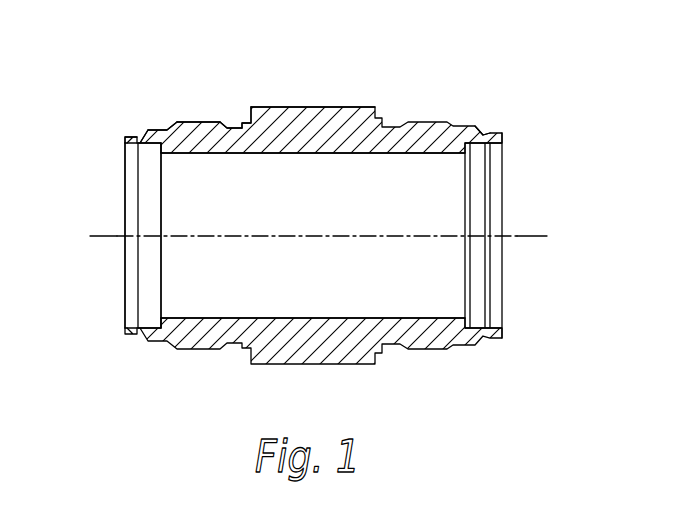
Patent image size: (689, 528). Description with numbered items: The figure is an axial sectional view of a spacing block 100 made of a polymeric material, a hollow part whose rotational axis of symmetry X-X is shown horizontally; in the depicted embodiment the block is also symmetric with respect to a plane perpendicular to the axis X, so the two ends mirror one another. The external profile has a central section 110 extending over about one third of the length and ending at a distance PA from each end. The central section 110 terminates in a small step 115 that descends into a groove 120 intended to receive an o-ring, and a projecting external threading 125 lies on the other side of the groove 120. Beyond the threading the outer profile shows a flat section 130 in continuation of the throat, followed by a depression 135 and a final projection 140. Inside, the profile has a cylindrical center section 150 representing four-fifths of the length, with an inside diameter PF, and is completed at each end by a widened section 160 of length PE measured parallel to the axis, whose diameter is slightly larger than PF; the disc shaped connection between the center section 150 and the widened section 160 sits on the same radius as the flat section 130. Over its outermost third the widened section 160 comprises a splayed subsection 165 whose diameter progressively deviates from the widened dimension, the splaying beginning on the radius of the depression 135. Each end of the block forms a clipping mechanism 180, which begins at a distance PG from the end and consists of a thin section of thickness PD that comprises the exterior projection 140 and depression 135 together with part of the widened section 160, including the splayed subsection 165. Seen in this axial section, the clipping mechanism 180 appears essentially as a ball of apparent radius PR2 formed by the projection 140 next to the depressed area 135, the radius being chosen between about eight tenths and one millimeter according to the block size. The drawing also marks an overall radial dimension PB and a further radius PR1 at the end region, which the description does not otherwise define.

The spacing block 100 is at (118, 67).
The central section 110 is at (272, 105).
The small step 115 is at (248, 120).
The groove 120 is at (222, 120).
The external threading 125 is at (178, 122).
The flat section 130 is at (165, 126).
The depression 135 is at (143, 137).
The final projection 140 is at (128, 140).
The cylindrical center section 150 is at (290, 154).
The widened section 160 is at (153, 143).
The splayed subsection 165 is at (128, 147).
The clipping mechanism 180 is at (512, 153).
The distance PA is at (502, 133).
The outer diameter dimension PB is at (502, 136).
The thickness PD is at (502, 327).
The length PE is at (465, 342).
The inside diameter PF is at (337, 318).
The distance PG is at (476, 118).
The first radius PR1 is at (483, 132).
The apparent radius PR2 is at (505, 130).
The rotational axis of symmetry X is at (318, 220).